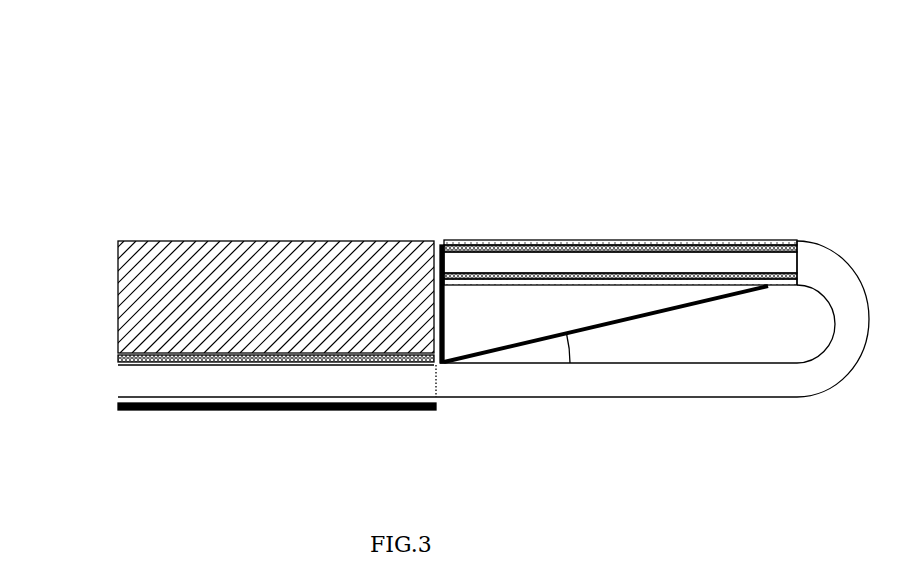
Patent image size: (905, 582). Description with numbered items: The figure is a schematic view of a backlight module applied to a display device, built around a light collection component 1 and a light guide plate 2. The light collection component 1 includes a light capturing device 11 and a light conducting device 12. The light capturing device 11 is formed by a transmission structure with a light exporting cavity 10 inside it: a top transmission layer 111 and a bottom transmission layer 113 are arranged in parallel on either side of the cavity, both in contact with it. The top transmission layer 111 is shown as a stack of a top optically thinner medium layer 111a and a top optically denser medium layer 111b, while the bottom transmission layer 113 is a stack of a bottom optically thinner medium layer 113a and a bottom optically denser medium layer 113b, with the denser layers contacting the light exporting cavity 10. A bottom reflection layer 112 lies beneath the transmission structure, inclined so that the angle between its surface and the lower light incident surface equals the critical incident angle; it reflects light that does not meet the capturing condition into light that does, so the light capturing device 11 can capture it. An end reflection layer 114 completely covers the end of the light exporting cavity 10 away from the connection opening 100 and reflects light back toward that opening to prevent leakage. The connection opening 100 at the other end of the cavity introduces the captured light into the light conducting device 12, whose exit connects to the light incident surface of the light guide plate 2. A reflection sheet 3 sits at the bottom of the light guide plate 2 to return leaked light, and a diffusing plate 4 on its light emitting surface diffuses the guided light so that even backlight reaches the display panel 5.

The light collection component 1 is at (858, 53).
The light guide plate 2 is at (347, 383).
The reflection sheet 3 is at (117, 406).
The diffusing plate 4 is at (118, 354).
The display panel 5 is at (118, 293).
The light exporting cavity 10 is at (561, 258).
The light capturing device 11 is at (802, 108).
The light conducting device 12 is at (844, 262).
The connection opening 100 is at (800, 243).
The top transmission layer 111 is at (473, 156).
The top optically thinner medium layer 111a is at (470, 242).
The top optically denser medium layer 111b is at (516, 243).
The bottom reflection layer 112 is at (706, 286).
The bottom transmission layer 113 is at (620, 154).
The bottom optically thinner medium layer 113a is at (618, 274).
The bottom optically denser medium layer 113b is at (668, 276).
The end reflection layer 114 is at (440, 245).